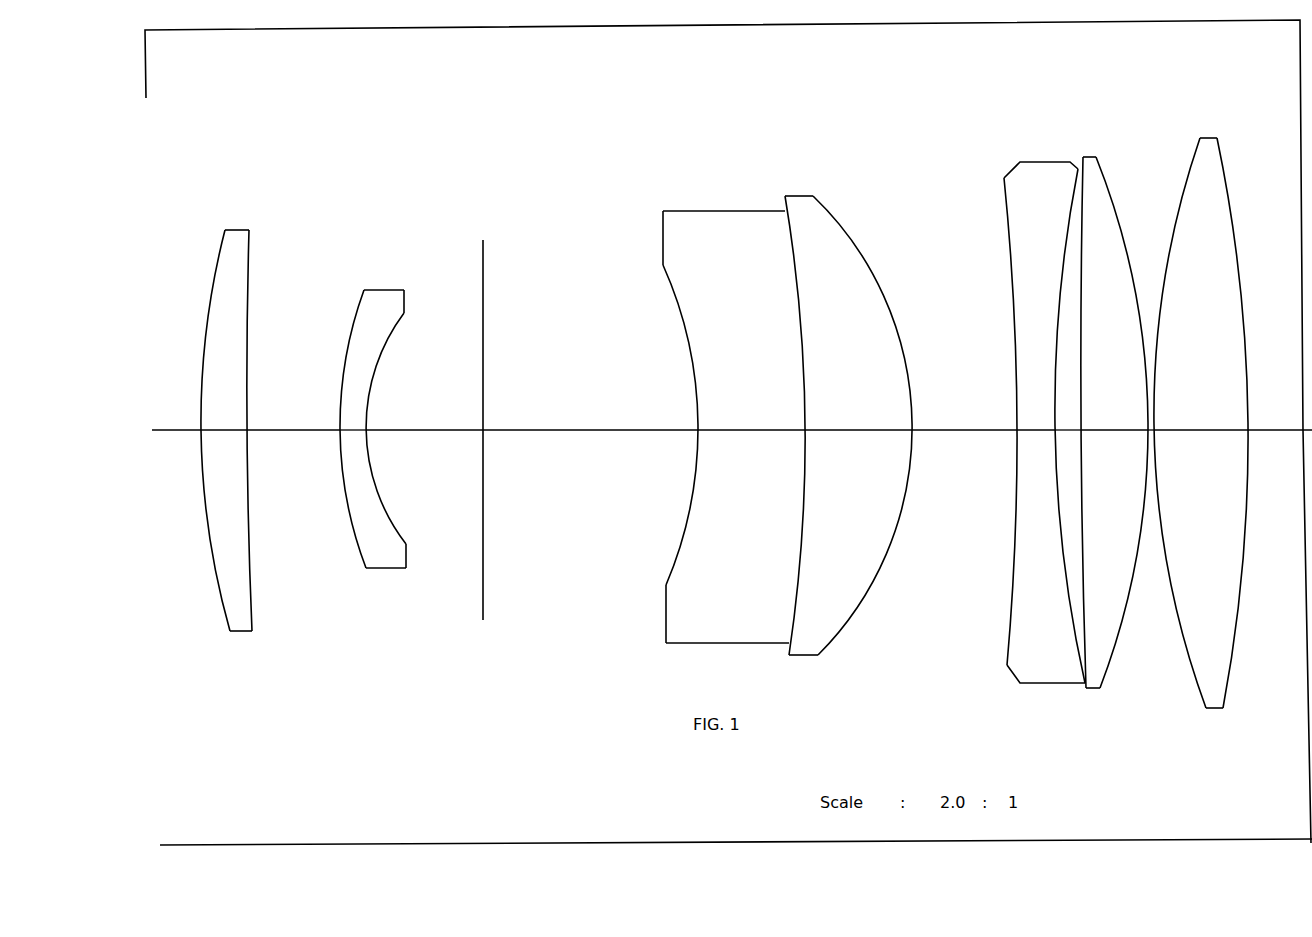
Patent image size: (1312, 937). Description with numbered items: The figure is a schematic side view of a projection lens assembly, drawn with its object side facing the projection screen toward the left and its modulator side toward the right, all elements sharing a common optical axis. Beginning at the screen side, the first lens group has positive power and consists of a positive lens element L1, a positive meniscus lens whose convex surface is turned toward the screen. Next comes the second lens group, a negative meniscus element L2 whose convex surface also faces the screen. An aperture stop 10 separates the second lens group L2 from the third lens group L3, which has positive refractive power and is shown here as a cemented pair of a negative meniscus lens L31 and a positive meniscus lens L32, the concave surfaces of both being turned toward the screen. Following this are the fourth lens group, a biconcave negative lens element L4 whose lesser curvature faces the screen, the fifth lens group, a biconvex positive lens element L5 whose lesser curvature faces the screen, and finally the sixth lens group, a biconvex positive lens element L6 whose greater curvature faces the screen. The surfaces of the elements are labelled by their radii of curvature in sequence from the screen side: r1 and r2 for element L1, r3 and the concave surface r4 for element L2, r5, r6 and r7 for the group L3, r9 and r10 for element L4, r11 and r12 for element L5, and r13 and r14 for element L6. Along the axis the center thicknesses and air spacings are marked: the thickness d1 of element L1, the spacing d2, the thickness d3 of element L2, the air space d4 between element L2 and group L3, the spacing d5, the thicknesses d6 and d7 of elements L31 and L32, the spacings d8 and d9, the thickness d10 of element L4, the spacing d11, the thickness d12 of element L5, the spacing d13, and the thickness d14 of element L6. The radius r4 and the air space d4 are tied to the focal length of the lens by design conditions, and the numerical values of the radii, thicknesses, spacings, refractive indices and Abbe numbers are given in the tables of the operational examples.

The positive lens element L1 is at (230, 391).
The negative meniscus element L2 is at (359, 399).
The third lens group L3 is at (746, 395).
The negative lens element L31 is at (692, 401).
The positive lens element L32 is at (848, 395).
The negative lens element L4 is at (1015, 396).
The positive lens element L5 is at (1114, 399).
The positive lens element L6 is at (1223, 398).
The aperture stop 10 is at (483, 313).
The radius of curvature r1 is at (212, 298).
The radius of curvature r2 is at (248, 313).
The radius of curvature r3 is at (343, 364).
The radius of curvature of the concave surface of lens element L2 r4 is at (377, 367).
The radius of curvature r5 is at (694, 372).
The radius of curvature r6 is at (800, 366).
The radius of curvature r7 is at (806, 434).
The radius of curvature r9 is at (1010, 278).
The radius of curvature r10 is at (1057, 505).
The radius of curvature r11 is at (1085, 333).
The radius of curvature r12 is at (1146, 452).
The radius of curvature r13 is at (1157, 351).
The radius of curvature r14 is at (1233, 216).
The center thickness d1 is at (224, 407).
The air spacing d2 is at (294, 407).
The center thickness d3 is at (356, 407).
The air space between second lens element L2 and third lens group L3 d4 is at (424, 407).
The air spacing d5 is at (590, 407).
The center thickness d6 is at (751, 406).
The center thickness d7 is at (805, 393).
The air spacing d8 is at (921, 415).
The air spacing d9 is at (984, 402).
The center thickness d10 is at (1038, 402).
The air spacing d11 is at (1065, 480).
The center thickness d12 is at (1114, 356).
The air spacing d13 is at (1150, 325).
The center thickness d14 is at (1201, 402).